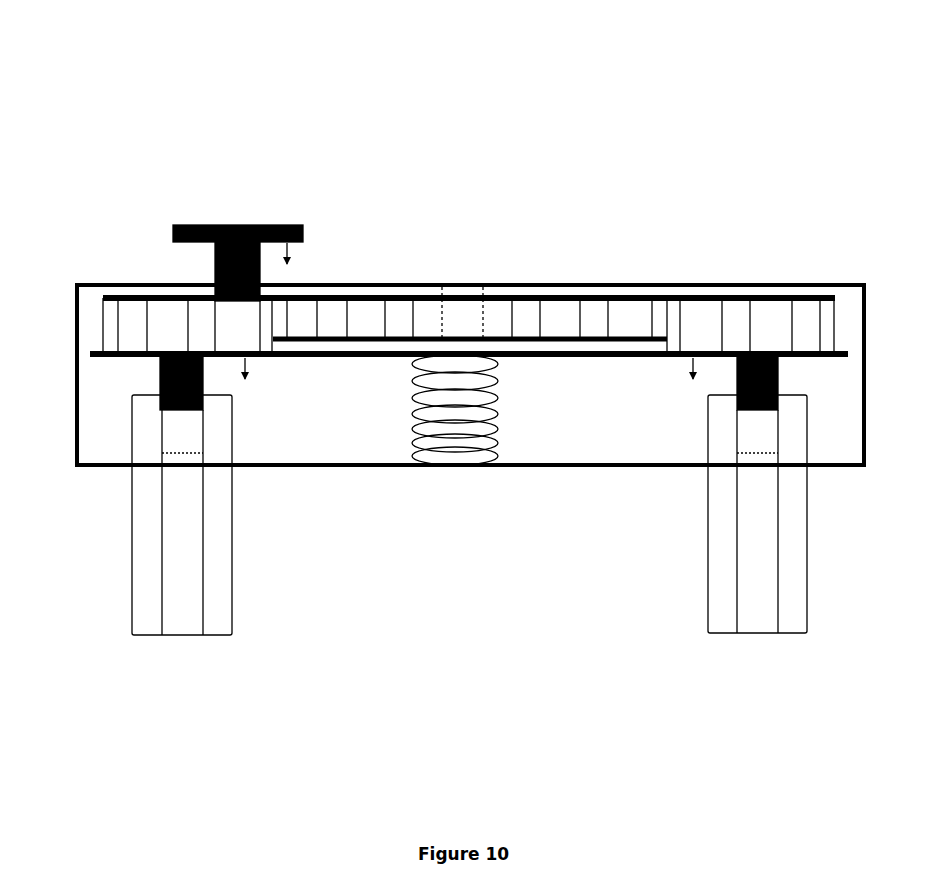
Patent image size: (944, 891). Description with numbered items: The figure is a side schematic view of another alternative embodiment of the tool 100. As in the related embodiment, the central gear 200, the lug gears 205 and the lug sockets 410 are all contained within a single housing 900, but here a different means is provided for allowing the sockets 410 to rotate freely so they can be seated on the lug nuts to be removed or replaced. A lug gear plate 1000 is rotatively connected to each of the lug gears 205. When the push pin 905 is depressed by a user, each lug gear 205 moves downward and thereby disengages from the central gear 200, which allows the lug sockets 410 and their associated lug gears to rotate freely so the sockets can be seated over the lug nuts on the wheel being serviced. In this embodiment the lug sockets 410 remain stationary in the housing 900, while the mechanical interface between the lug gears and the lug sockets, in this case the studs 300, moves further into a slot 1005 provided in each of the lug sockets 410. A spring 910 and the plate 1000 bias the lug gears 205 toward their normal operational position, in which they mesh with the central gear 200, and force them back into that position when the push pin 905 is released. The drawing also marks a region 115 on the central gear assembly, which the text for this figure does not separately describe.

The tool 100 is at (469, 112).
The housing 900 is at (583, 468).
The lug gear plate 1000 is at (637, 356).
The lug gears 205 is at (163, 298).
The central gear 200 is at (585, 298).
The region 115 is at (453, 300).
The push pin 905 is at (220, 225).
The studs 300 is at (160, 372).
The lug sockets 410 is at (808, 585).
The slot 1005 is at (167, 449).
The spring 910 is at (415, 403).